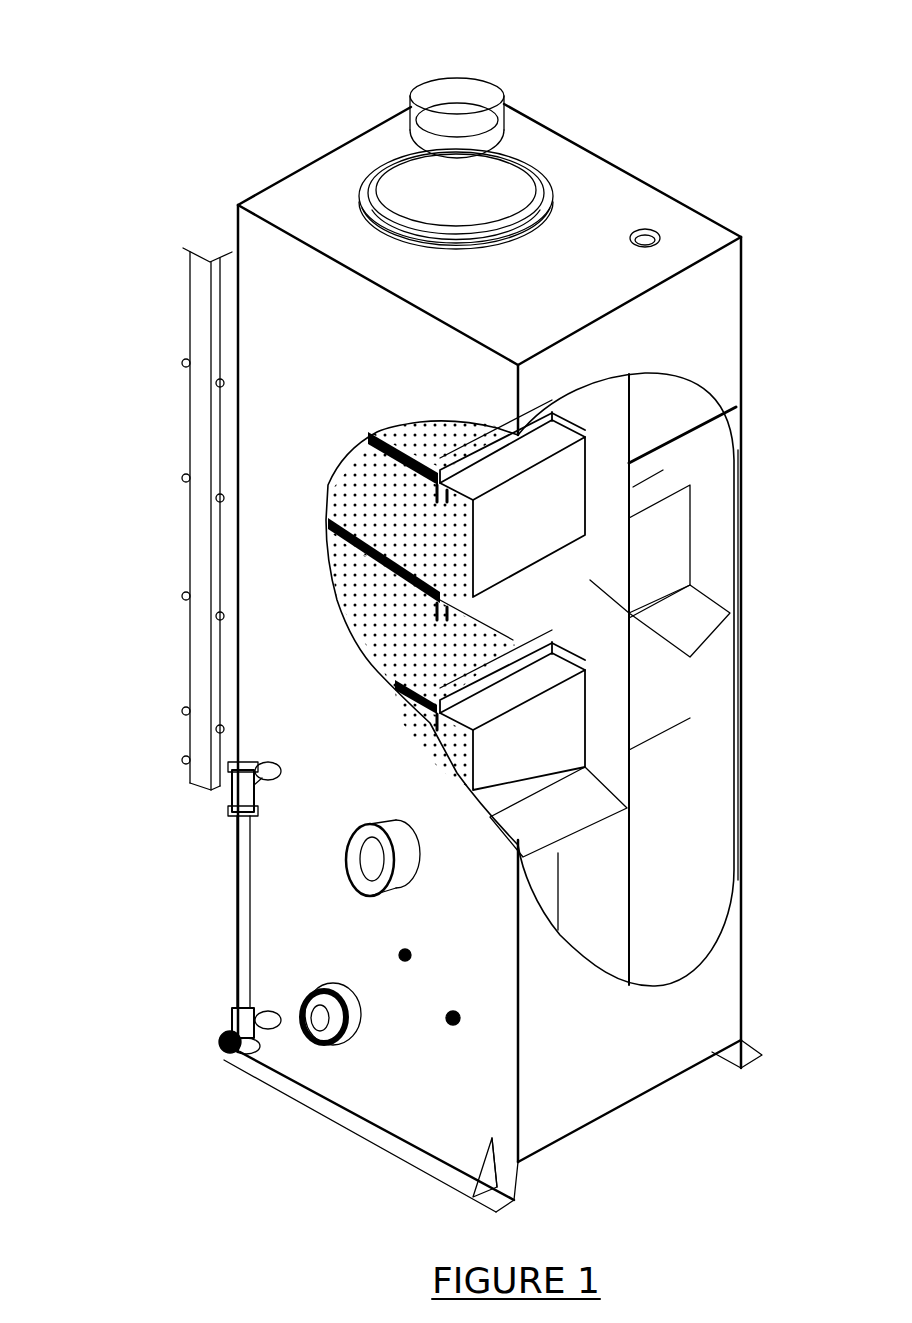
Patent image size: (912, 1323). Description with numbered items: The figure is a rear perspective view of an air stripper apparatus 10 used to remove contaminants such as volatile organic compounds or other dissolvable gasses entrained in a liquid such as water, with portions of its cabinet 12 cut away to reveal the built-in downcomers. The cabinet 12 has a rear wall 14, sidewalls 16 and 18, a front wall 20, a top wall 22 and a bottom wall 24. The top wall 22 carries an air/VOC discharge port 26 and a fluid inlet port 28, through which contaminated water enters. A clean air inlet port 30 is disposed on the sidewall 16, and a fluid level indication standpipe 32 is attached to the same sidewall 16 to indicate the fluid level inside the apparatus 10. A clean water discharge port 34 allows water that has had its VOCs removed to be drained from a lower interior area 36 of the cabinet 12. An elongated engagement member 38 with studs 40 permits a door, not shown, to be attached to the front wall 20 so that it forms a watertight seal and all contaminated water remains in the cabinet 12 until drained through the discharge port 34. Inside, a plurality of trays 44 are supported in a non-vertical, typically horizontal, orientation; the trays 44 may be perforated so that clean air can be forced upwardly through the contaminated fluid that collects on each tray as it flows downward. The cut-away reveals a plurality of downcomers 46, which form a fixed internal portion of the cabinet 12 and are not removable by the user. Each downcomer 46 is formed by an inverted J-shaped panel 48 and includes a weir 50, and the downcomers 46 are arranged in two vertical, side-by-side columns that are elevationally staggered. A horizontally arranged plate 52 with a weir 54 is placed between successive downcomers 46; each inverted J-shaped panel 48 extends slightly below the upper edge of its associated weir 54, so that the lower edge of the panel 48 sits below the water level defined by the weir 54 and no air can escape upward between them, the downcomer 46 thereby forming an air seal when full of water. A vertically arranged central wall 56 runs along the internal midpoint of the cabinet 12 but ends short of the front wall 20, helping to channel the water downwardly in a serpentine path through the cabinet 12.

The air stripper apparatus 10 is at (152, 64).
The cabinet 12 is at (738, 229).
The rear wall 14 is at (700, 306).
The sidewall 16 is at (352, 323).
The sidewall 18 is at (623, 168).
The front wall 20 is at (228, 221).
The top wall 22 is at (338, 150).
The bottom wall 24 is at (607, 1110).
The air/VOC discharge port 26 is at (500, 157).
The fluid inlet port 28 is at (645, 230).
The clean air inlet port 30 is at (382, 833).
The fluid level indication standpipe 32 is at (242, 920).
The clean water discharge port 34 is at (313, 983).
The lower interior area 36 is at (607, 697).
The elongated engagement member 38 is at (190, 322).
The studs 40 is at (190, 760).
The trays 44 is at (358, 598).
The downcomers 46 is at (655, 529).
The inverted J-shaped panel 48 is at (540, 484).
The weir 50 is at (495, 435).
The horizontally arranged plate 52 is at (680, 630).
The weir 54 is at (437, 584).
The central wall 56 is at (600, 517).